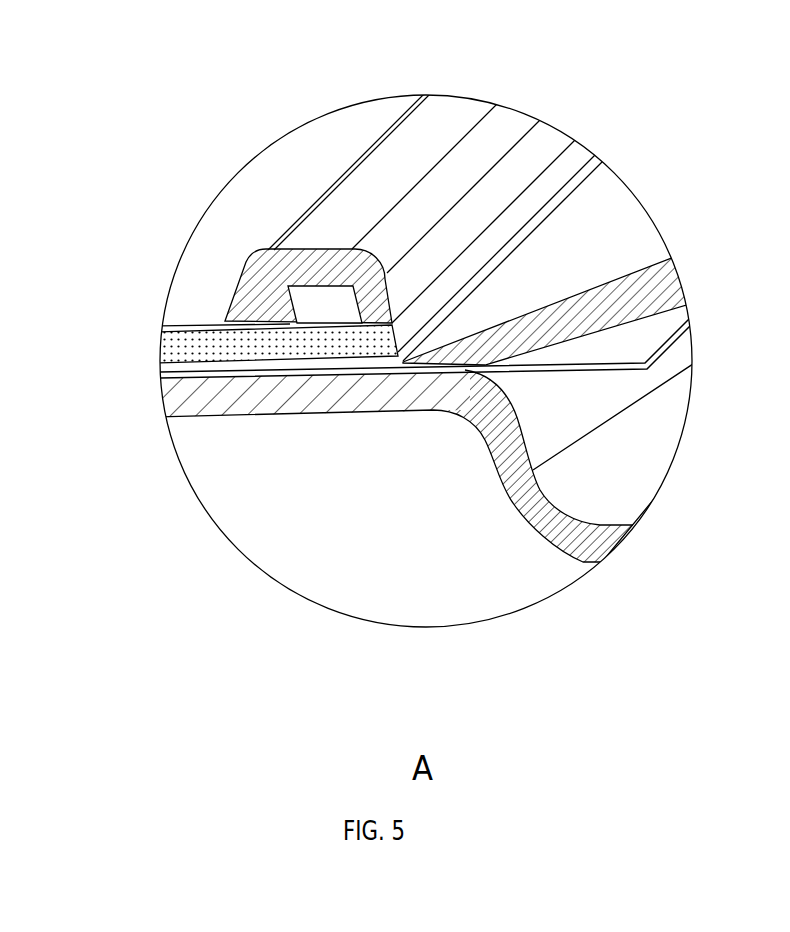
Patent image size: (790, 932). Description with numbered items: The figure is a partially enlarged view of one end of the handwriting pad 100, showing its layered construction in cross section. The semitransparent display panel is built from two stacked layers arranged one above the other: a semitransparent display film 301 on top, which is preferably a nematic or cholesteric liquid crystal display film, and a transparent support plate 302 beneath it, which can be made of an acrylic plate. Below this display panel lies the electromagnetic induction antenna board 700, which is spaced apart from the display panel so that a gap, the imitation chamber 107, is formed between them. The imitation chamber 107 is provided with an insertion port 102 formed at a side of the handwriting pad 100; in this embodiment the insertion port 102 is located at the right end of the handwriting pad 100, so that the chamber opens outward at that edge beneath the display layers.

The handwriting pad 100 is at (385, 187).
The insertion port 102 is at (600, 213).
The display film 301 is at (187, 325).
The support plate 302 is at (185, 350).
The imitation chamber 107 is at (290, 368).
The electromagnetic induction antenna board 700 is at (368, 372).